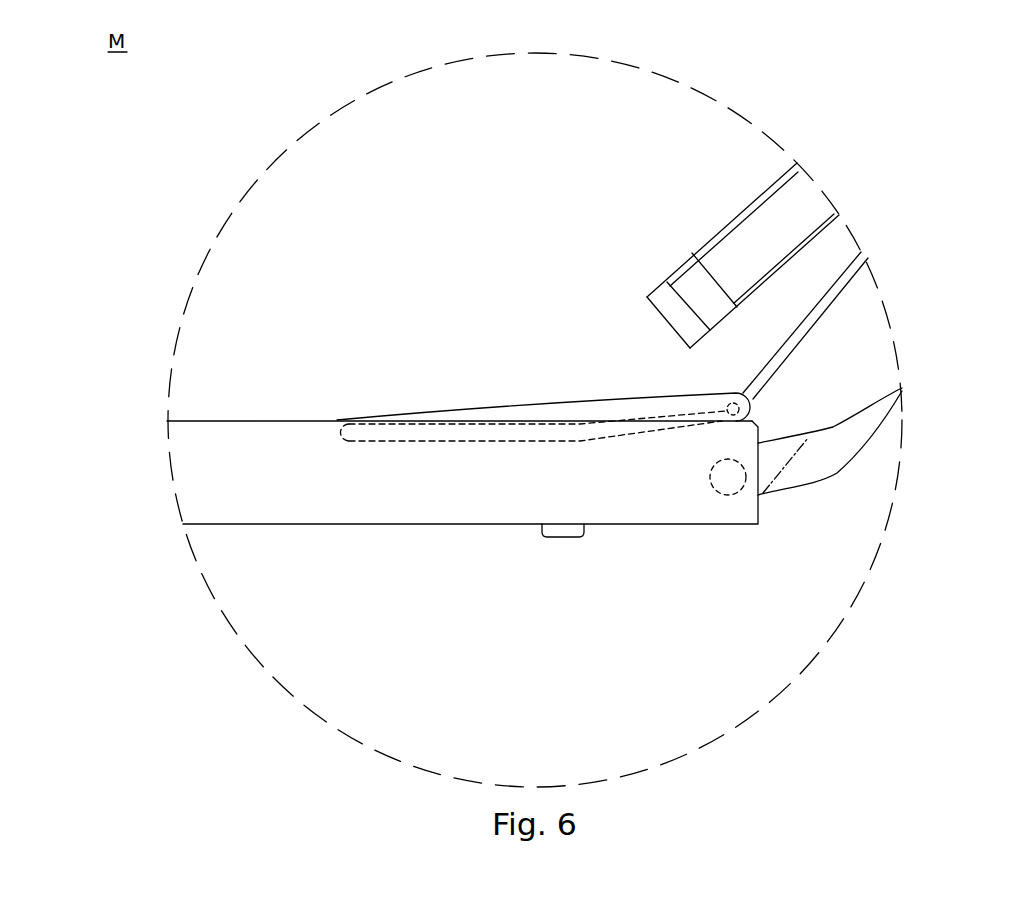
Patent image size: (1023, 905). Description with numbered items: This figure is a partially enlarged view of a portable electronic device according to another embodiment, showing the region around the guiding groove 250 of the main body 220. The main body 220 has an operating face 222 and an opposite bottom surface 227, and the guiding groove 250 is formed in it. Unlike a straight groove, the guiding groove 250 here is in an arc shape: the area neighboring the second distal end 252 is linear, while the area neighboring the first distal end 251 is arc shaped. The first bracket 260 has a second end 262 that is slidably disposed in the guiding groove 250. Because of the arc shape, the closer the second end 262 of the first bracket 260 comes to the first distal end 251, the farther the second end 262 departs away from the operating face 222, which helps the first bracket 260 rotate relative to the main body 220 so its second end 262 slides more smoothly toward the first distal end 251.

The main body 220 is at (392, 525).
The operating face 222 is at (422, 421).
The bottom surface 227 is at (300, 525).
The guiding groove 250 is at (483, 424).
The first distal end 251 is at (693, 415).
The second distal end 252 is at (370, 432).
The first bracket 260 is at (817, 325).
The second end 262 is at (752, 413).